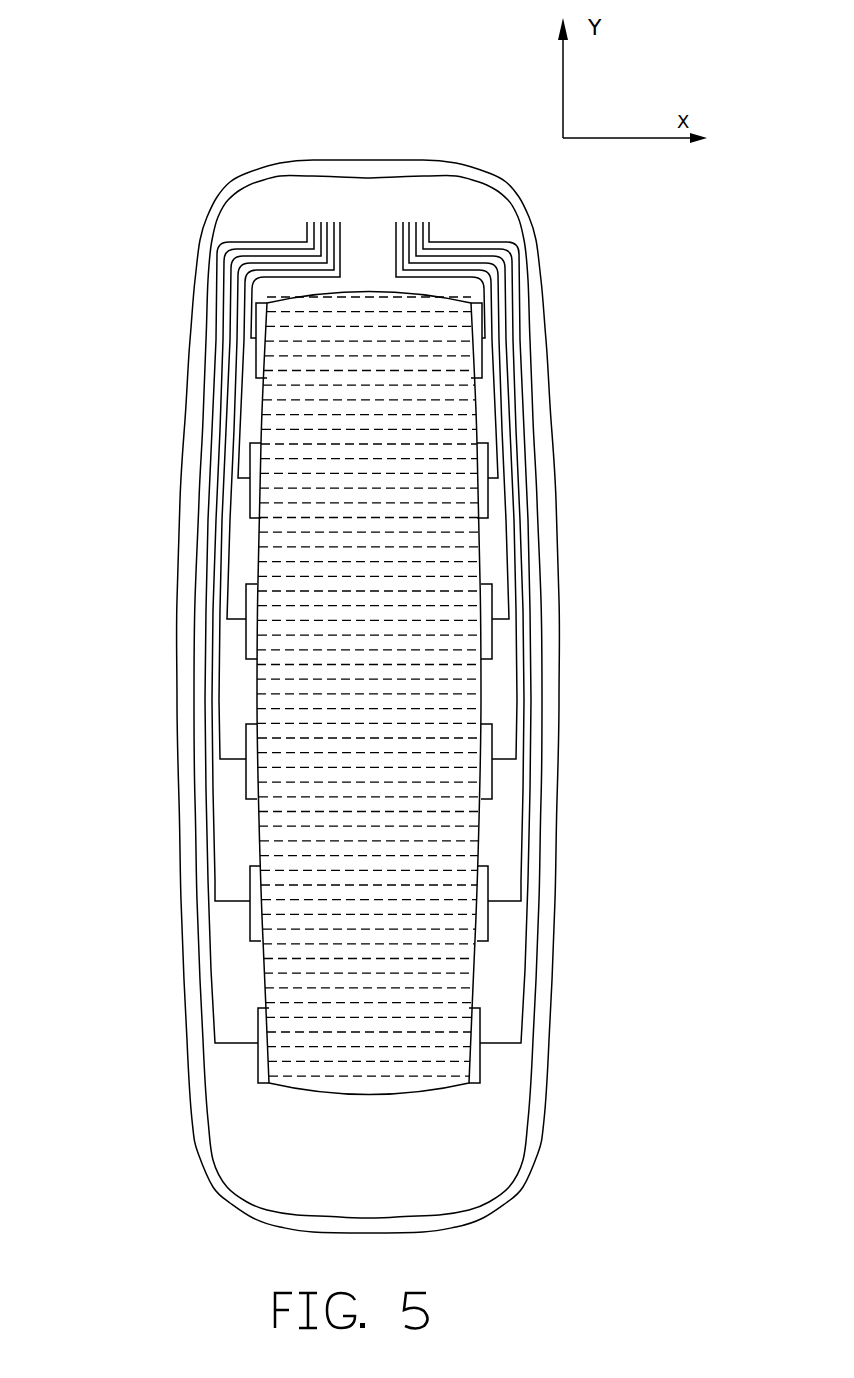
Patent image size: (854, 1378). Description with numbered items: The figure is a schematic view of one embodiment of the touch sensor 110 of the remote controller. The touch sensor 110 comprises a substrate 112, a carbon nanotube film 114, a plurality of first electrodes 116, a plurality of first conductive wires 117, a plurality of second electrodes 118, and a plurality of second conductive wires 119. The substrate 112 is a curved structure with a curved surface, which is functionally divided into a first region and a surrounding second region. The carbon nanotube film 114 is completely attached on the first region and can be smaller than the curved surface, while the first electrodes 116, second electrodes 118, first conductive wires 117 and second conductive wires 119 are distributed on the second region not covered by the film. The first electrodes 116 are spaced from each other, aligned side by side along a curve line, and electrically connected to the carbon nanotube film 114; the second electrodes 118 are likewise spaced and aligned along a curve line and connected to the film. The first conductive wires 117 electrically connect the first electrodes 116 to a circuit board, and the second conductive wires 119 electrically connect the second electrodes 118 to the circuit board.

The touch sensor 110 is at (177, 60).
The substrate 112 is at (322, 208).
The carbon nanotube film 114 is at (455, 712).
The first electrodes 116 is at (484, 600).
The first conductive wires 117 is at (510, 392).
The second electrodes 118 is at (262, 465).
The second conductive wires 119 is at (216, 338).